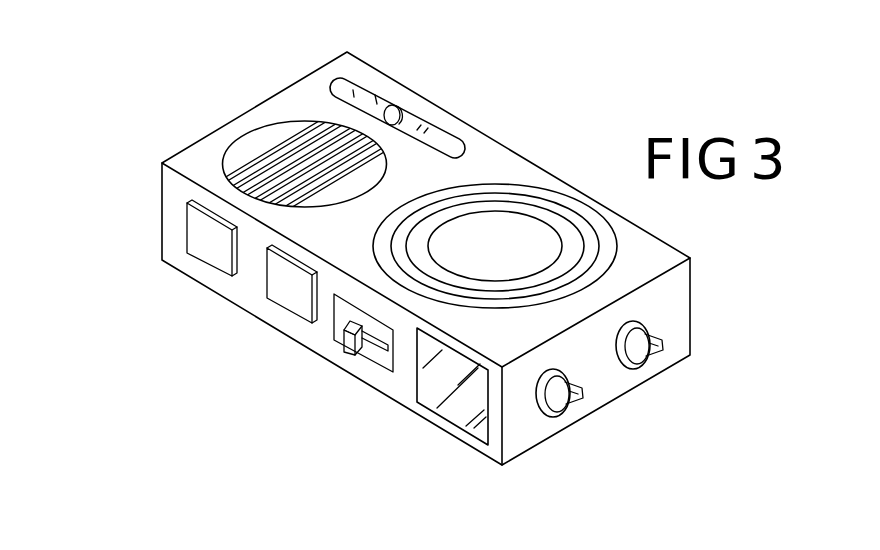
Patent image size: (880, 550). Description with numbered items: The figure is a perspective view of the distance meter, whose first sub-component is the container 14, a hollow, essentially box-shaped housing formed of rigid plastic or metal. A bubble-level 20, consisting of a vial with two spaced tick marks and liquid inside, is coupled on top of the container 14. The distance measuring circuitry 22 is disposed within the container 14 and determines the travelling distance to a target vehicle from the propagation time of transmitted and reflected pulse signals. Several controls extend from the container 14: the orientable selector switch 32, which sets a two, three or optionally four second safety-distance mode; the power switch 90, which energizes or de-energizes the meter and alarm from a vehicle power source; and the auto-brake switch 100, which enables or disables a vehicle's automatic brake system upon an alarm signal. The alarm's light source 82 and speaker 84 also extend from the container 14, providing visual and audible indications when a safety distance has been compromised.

The container 14 is at (295, 78).
The bubble-level 20 is at (377, 95).
The distance measuring circuitry 22 is at (540, 202).
The selector switch 32 is at (362, 358).
The light source 82 is at (457, 415).
The speaker 84 is at (265, 150).
The power switch 90 is at (200, 240).
The auto-brake switch 100 is at (295, 300).